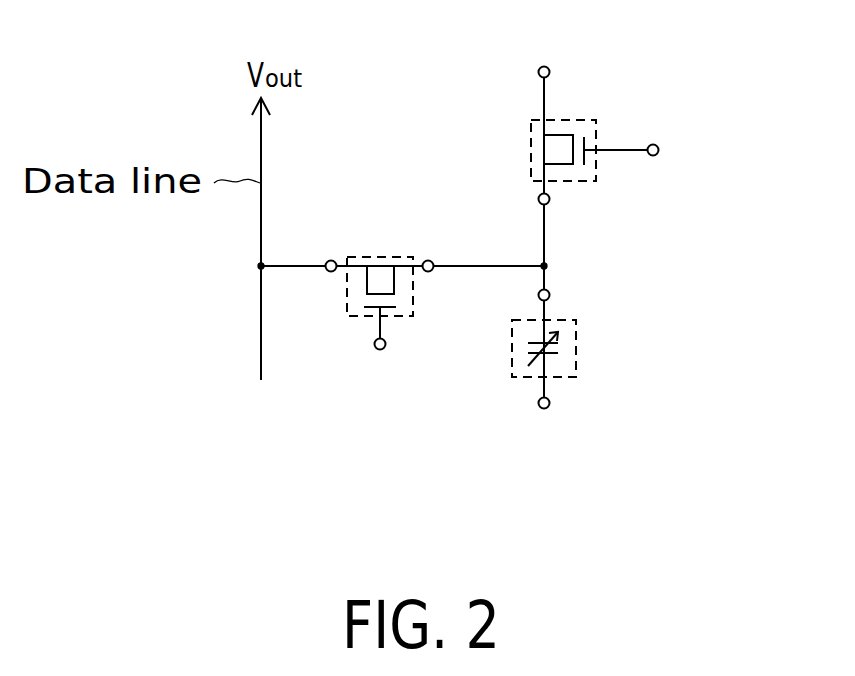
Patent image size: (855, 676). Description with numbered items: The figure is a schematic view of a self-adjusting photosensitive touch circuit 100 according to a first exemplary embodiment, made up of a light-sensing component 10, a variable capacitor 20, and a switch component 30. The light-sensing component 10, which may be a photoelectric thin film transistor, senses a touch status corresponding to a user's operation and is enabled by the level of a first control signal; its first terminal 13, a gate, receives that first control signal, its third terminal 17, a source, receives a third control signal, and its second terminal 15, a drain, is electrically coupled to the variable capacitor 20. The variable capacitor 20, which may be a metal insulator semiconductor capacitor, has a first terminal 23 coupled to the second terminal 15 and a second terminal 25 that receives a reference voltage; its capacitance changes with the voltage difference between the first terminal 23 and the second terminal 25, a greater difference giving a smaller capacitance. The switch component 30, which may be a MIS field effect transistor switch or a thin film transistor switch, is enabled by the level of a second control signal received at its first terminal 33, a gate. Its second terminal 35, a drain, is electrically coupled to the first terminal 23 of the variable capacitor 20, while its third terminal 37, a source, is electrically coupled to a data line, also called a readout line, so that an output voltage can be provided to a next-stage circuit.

The light-sensing component 10 is at (530, 147).
The first terminal 13 is at (655, 144).
The second terminal 15 is at (550, 198).
The third terminal 17 is at (538, 72).
The variable capacitor 20 is at (592, 346).
The first terminal 23 is at (550, 293).
The second terminal 25 is at (550, 401).
The switch component 30 is at (384, 255).
The first terminal 33 is at (386, 343).
The second terminal 35 is at (429, 260).
The third terminal 37 is at (331, 260).
The self-adjusting photosensitive touch circuit 100 is at (818, 483).